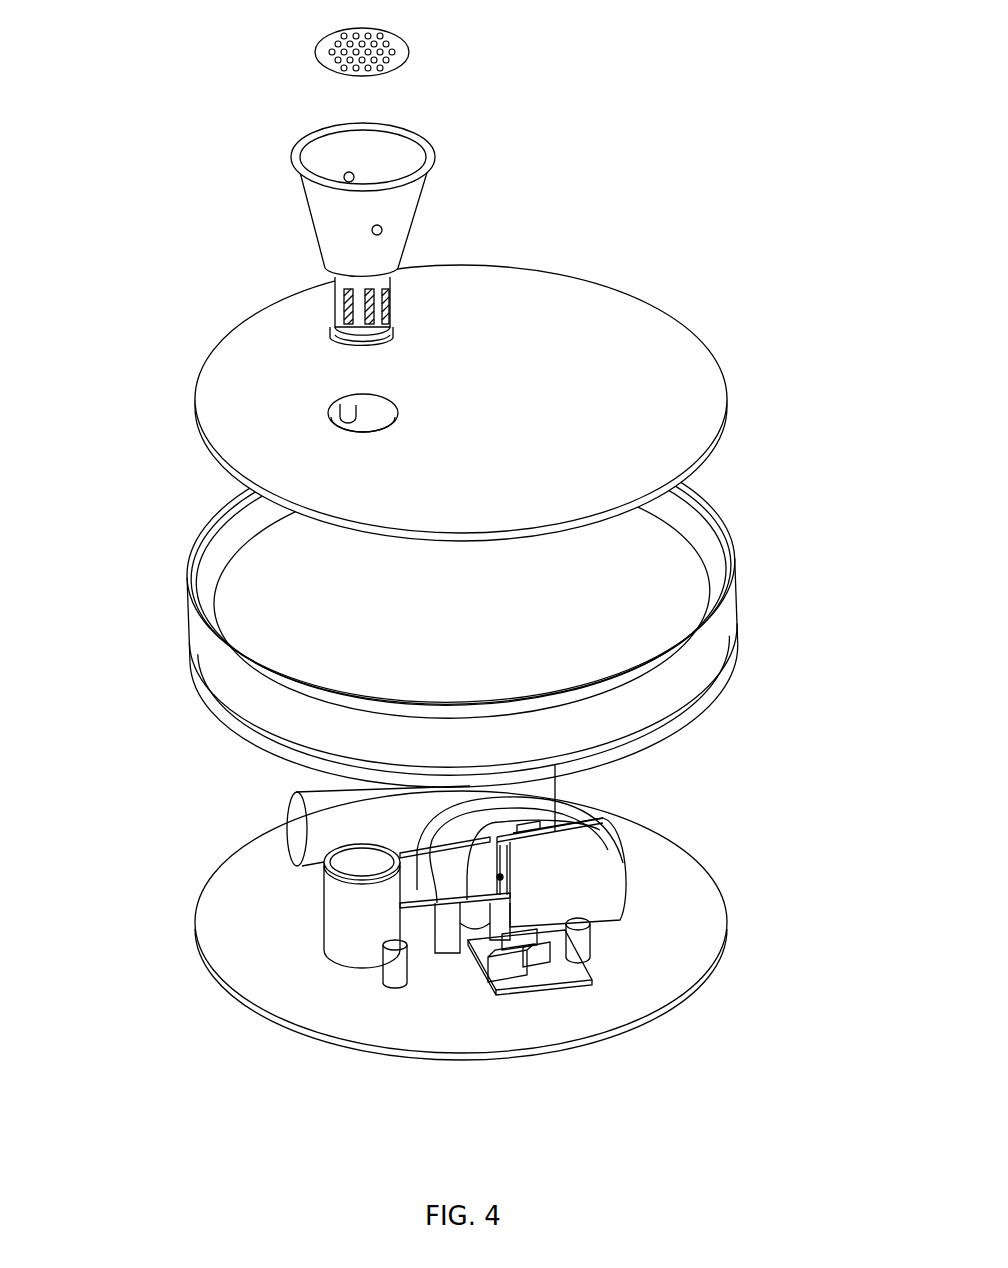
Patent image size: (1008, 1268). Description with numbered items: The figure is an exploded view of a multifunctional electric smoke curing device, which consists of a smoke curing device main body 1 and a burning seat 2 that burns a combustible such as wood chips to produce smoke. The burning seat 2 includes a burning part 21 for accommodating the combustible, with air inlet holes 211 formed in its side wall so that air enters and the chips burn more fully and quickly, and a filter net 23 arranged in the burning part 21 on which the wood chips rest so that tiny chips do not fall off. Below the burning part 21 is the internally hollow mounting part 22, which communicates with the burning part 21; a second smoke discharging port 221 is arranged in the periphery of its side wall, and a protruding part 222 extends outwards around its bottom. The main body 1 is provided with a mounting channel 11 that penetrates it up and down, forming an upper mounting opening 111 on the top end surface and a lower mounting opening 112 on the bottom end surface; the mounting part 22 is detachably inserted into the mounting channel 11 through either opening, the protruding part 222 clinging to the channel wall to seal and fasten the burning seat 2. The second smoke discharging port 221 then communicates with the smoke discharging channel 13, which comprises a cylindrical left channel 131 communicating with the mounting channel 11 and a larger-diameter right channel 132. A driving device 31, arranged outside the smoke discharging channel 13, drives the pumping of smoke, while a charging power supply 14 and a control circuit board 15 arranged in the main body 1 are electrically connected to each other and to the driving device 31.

The smoke curing device main body 1 is at (712, 256).
The burning seat 2 is at (143, 272).
The burning part 21 is at (337, 199).
The air inlet holes 211 is at (383, 232).
The mounting part 22 is at (350, 305).
The second smoke discharging port 221 is at (387, 313).
The protruding part 222 is at (393, 335).
The filter net 23 is at (428, 46).
The mounting channel 11 is at (382, 923).
The upper mounting opening 111 is at (326, 890).
The lower mounting opening 112 is at (326, 943).
The smoke discharging channel 13 is at (642, 815).
The left channel 131 is at (556, 765).
The right channel 132 is at (470, 786).
The charging power supply 14 is at (300, 835).
The control circuit board 15 is at (565, 970).
The driving device 31 is at (587, 853).